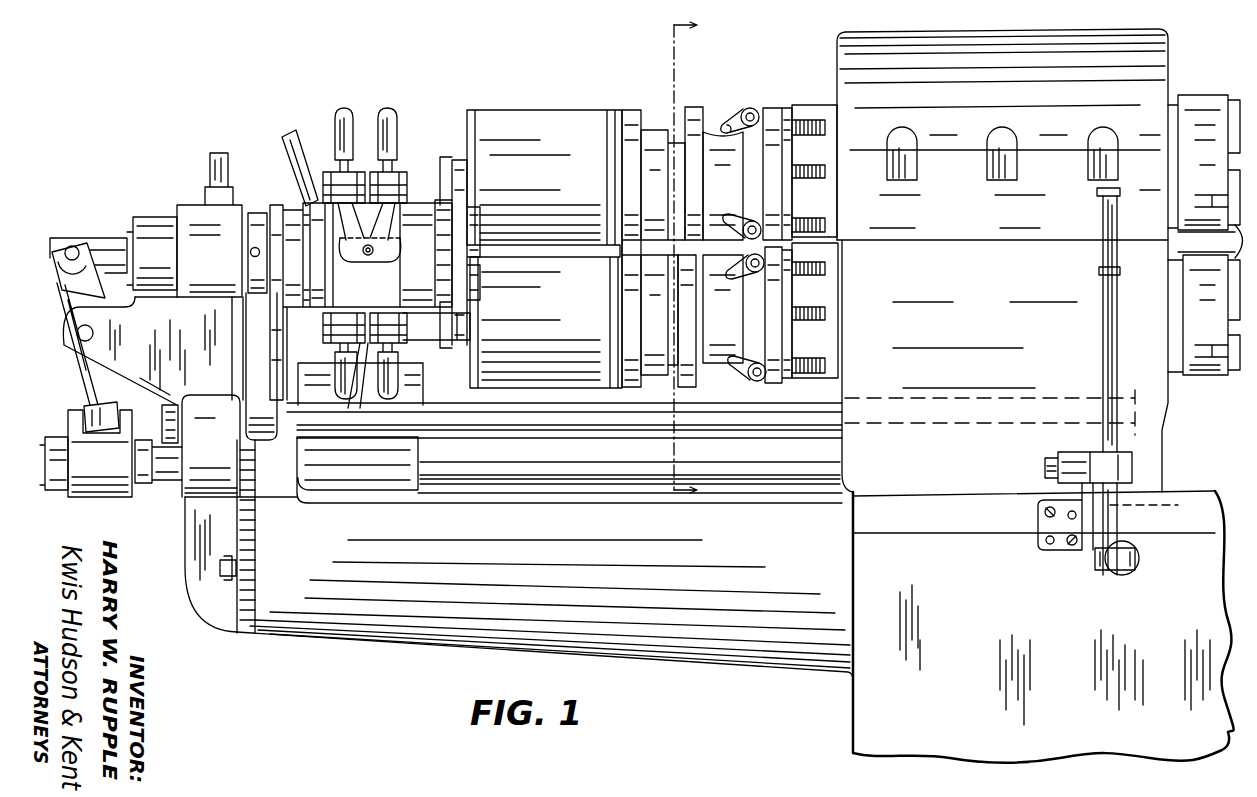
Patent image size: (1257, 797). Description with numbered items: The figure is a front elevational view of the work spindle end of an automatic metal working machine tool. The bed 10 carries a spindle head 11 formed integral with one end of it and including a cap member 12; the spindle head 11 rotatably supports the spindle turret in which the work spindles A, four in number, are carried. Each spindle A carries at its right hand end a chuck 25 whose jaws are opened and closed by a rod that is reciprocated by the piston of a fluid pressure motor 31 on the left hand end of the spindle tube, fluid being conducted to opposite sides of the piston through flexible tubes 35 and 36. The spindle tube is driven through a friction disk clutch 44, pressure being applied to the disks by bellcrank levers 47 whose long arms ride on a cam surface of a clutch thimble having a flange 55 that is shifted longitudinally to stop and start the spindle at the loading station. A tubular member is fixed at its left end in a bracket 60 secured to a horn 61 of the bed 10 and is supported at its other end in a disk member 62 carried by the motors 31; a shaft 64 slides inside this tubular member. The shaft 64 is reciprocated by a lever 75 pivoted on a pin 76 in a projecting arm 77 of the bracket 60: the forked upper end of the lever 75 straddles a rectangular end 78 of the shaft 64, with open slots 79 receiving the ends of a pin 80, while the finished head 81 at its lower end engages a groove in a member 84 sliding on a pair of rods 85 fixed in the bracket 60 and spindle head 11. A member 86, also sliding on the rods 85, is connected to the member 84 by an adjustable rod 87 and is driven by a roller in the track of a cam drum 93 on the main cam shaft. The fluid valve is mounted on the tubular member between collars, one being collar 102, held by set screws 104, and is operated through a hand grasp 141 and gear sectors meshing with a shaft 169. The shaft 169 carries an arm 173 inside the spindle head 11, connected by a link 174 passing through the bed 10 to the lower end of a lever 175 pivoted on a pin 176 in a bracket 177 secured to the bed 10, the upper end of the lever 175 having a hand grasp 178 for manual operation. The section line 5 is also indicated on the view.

The section line 5- 5 is at (695, 256).
The bed 10 is at (858, 713).
The spindle head 11 is at (948, 252).
The cap member 12 is at (1012, 40).
The chuck 25 is at (1190, 96).
The fluid pressure motor 31 is at (510, 110).
The flexible tube 35 is at (345, 112).
The flexible tube 36 is at (392, 112).
The friction disk clutch 44 is at (812, 120).
The bellcrank levers 47 is at (733, 112).
The flange 55 is at (693, 108).
The bracket 60 is at (195, 522).
The horn 61 is at (286, 638).
The disk member 62 is at (630, 112).
The shaft 64 is at (115, 237).
The lever 75 is at (68, 308).
The pin 76 is at (78, 338).
The projecting arm 77 is at (150, 380).
The rectangular end 78 is at (64, 246).
The open slots 79 is at (73, 252).
The pin 80 is at (62, 278).
The finished head 81 is at (88, 412).
The member 84 is at (92, 492).
The rods 85 is at (506, 485).
The member 86 is at (414, 490).
The rod 87 is at (44, 478).
The cam drum 93 is at (420, 380).
The collar 102 is at (257, 214).
The set screws 104 is at (258, 248).
The hand grasp 141 is at (297, 128).
The shaft 169 is at (556, 412).
The arm 173 is at (1034, 512).
The link 174 is at (1138, 575).
The lever 175 is at (1102, 328).
The pin 176 is at (1135, 468).
The bracket 177 is at (1040, 514).
The hand grasp 178 is at (1098, 220).
The work spindles A is at (772, 108).